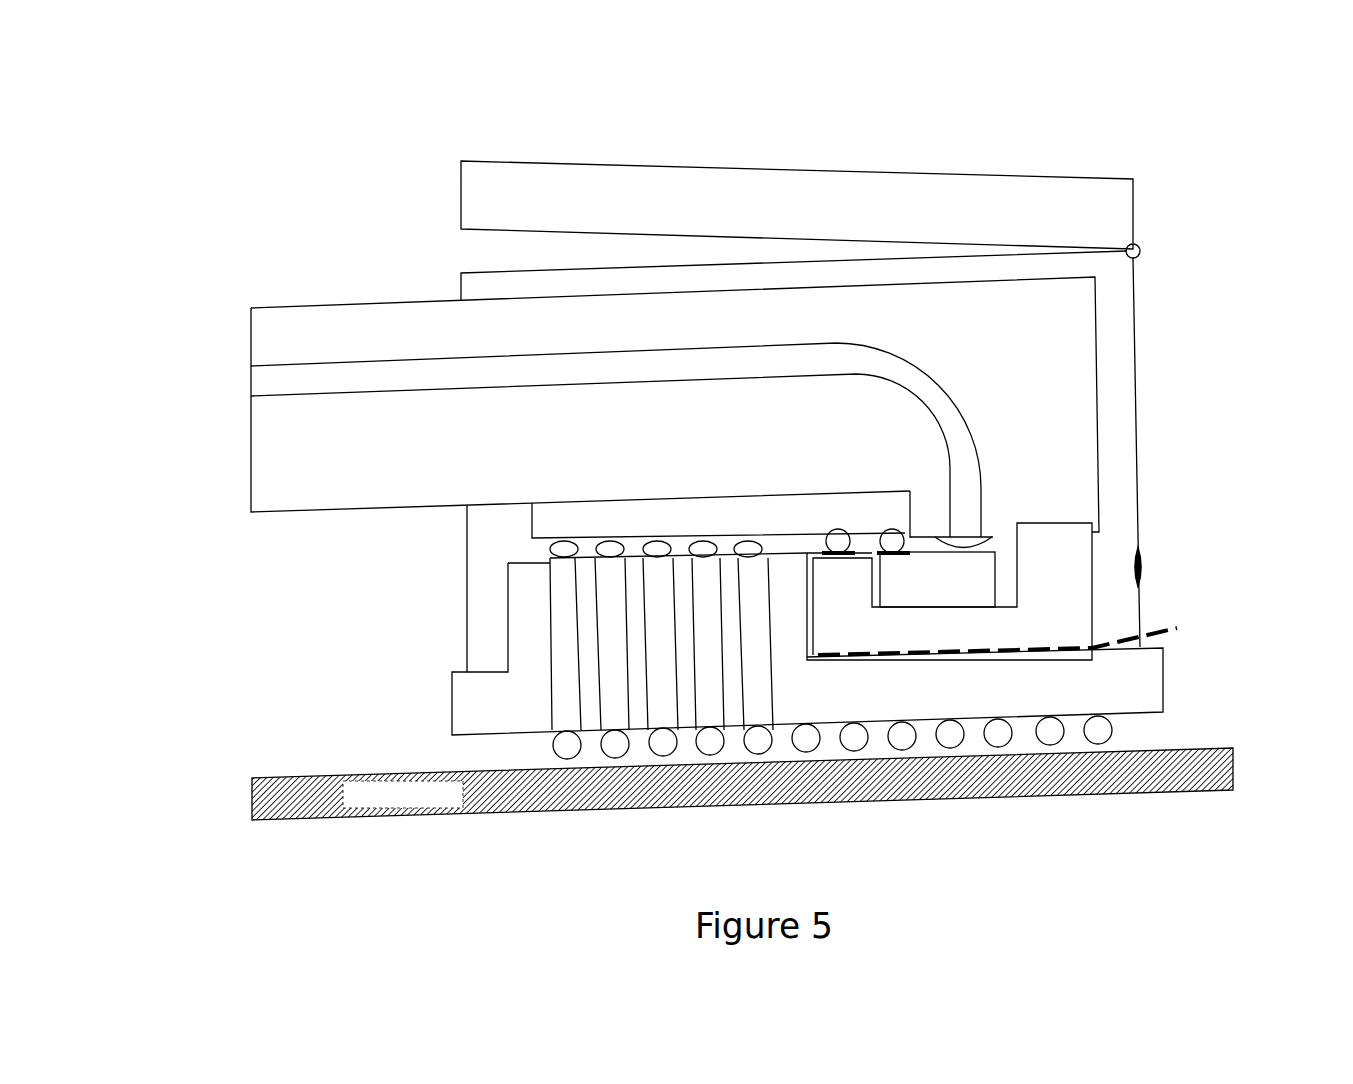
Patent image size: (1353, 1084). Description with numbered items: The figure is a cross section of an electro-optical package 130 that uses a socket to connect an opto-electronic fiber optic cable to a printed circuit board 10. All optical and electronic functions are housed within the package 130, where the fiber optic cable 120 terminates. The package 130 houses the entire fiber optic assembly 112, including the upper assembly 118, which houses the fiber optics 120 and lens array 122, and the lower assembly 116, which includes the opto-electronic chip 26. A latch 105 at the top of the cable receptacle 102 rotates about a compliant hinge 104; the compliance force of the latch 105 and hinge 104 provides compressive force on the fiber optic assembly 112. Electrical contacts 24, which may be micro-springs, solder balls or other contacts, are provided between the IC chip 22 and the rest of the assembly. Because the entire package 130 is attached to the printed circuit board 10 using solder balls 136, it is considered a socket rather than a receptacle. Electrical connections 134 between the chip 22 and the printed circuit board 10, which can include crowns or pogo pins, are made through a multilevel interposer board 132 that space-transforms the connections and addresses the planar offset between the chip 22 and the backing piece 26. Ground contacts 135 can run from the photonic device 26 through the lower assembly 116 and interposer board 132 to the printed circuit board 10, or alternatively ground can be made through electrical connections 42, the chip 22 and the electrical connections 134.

The printed circuit board 10 is at (252, 793).
The IC chip 22 is at (735, 531).
The electrical contacts 24 is at (550, 545).
The opto-electronic chip 26 is at (952, 592).
The electrical connections 42 is at (895, 532).
The cable receptacle 102 is at (1140, 473).
The compliant hinge 104 is at (1139, 246).
The latch 105 is at (757, 178).
The optical cable housing 112 is at (618, 339).
The lower assembly 116 is at (960, 642).
The upper assembly 118 is at (244, 420).
The fiber optic cable 120 is at (902, 377).
The lens array 122 is at (982, 533).
The electro-optical package 130 is at (340, 890).
The multilevel interposer board 132 is at (527, 648).
The electrical connections 134 is at (548, 612).
The ground contacts 135 is at (1140, 640).
The solder balls 136 is at (1113, 718).